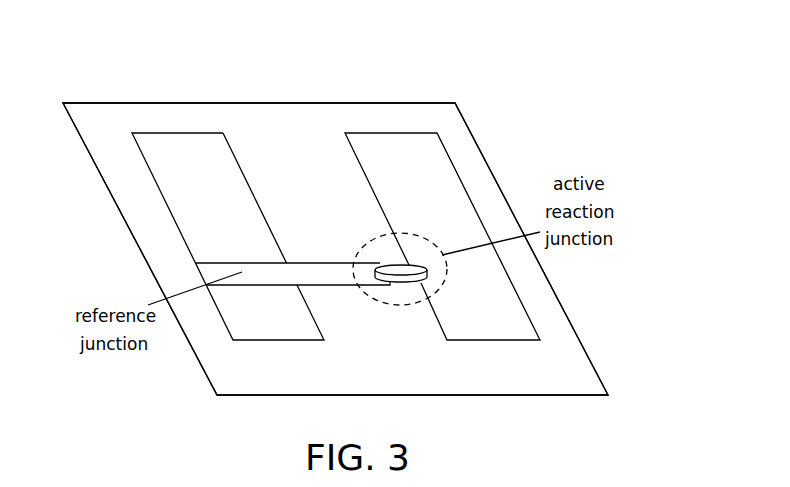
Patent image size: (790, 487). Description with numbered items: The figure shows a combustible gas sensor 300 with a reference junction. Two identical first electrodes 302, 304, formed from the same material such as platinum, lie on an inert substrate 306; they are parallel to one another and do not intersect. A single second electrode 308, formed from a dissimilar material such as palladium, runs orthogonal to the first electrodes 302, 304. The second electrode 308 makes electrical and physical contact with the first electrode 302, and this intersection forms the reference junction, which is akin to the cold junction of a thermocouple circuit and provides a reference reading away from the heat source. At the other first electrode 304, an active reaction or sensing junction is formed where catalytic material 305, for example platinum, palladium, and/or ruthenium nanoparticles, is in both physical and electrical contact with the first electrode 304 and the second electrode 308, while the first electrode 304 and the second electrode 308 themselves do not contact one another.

The sensor 300 is at (508, 113).
The first electrode 302 is at (155, 182).
The first electrode 304 is at (467, 190).
The catalytic material 305 is at (402, 282).
The inert substrate 306 is at (128, 126).
The second electrode 308 is at (312, 262).